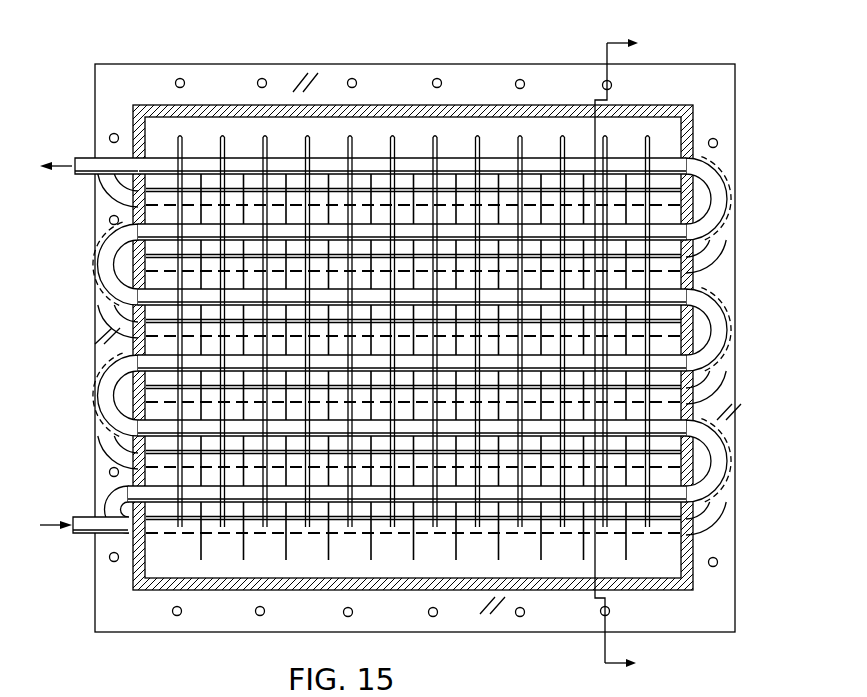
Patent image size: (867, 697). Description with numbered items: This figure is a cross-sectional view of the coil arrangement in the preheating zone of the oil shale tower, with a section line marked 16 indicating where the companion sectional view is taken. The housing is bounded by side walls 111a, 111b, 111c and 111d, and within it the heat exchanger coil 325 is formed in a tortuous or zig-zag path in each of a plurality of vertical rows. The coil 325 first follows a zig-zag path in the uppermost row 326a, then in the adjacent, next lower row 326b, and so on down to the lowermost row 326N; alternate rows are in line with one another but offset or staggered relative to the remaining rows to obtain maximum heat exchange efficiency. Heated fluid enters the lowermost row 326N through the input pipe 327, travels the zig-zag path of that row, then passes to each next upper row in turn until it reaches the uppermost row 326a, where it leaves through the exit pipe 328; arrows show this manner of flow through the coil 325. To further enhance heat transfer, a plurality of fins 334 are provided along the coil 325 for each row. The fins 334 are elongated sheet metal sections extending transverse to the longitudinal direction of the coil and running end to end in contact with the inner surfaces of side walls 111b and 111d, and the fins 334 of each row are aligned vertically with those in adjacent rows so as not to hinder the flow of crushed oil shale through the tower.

The side wall 111a is at (186, 105).
The side wall 111b is at (700, 284).
The side wall 111c is at (187, 588).
The side wall 111d is at (137, 213).
The heat exchanger coil 325 is at (712, 173).
The uppermost row 326a is at (720, 192).
The next lower row 326b is at (714, 251).
The lowermost row 326N is at (106, 534).
The input pipe 327 is at (90, 518).
The exit pipe 328 is at (106, 162).
The fins 334 is at (480, 152).
The section line 16- 16 is at (599, 357).